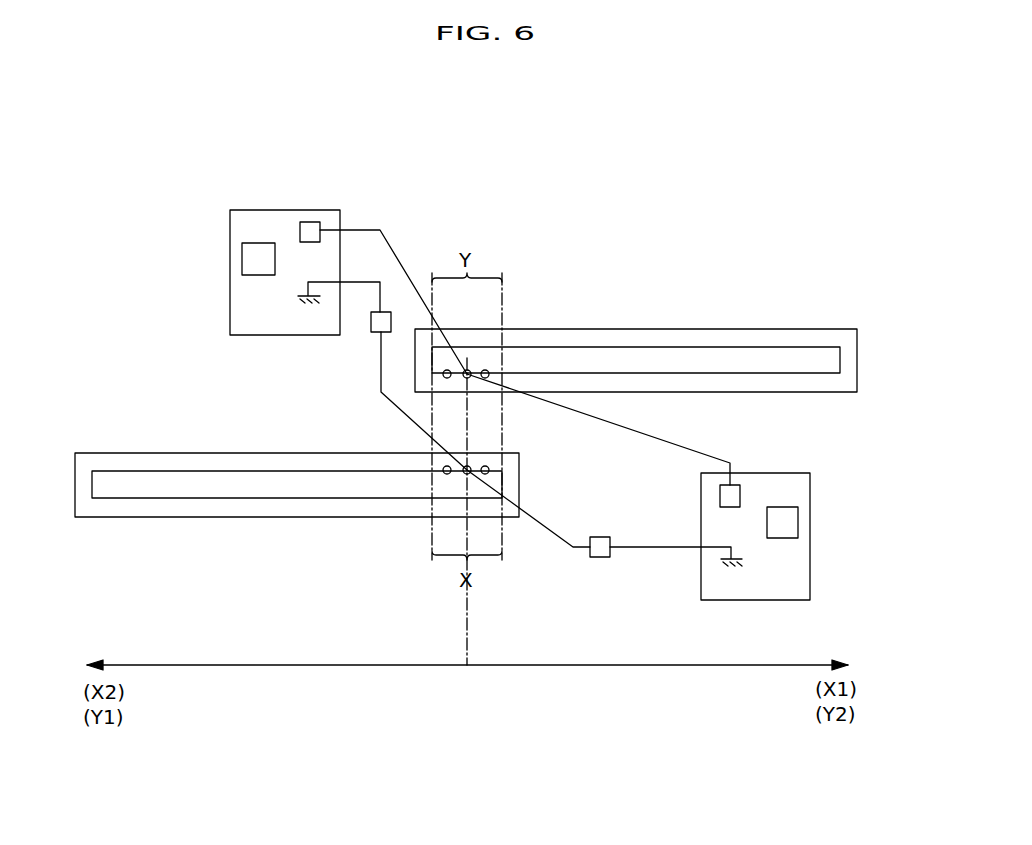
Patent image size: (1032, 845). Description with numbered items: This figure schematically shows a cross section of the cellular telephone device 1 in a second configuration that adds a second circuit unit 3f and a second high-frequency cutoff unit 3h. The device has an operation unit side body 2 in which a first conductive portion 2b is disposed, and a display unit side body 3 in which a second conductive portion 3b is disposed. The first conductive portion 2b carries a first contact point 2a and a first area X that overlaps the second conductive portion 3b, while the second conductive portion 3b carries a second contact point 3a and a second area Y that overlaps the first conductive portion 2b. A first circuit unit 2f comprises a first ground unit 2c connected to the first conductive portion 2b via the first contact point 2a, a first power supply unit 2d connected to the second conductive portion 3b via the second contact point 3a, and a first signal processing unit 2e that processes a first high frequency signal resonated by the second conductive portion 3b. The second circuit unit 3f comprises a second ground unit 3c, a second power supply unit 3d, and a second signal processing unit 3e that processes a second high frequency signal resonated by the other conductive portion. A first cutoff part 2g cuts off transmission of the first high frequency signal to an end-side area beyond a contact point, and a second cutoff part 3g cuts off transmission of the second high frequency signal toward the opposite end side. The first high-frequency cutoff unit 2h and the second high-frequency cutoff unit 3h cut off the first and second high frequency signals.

The cellular telephone device 1 is at (780, 168).
The operation unit side body 2 is at (112, 518).
The first contact point 2a is at (490, 466).
The first conductive portion 2b is at (182, 485).
The first ground unit 2c is at (302, 298).
The first power supply unit 2d is at (311, 230).
The first signal processing unit 2e is at (243, 264).
The first circuit unit 2f is at (244, 210).
The first cutoff part 2g is at (443, 372).
The first high-frequency cutoff unit 2h is at (381, 312).
The display unit side body 3 is at (835, 329).
The second contact point 3a is at (464, 380).
The second conductive portion 3b is at (810, 360).
The second ground unit 3c is at (726, 562).
The second power supply unit 3d is at (735, 496).
The second signal processing unit 3e is at (796, 522).
The second circuit unit 3f is at (810, 558).
The second cutoff part 3g is at (488, 370).
The second high-frequency cutoff unit 3h is at (600, 557).